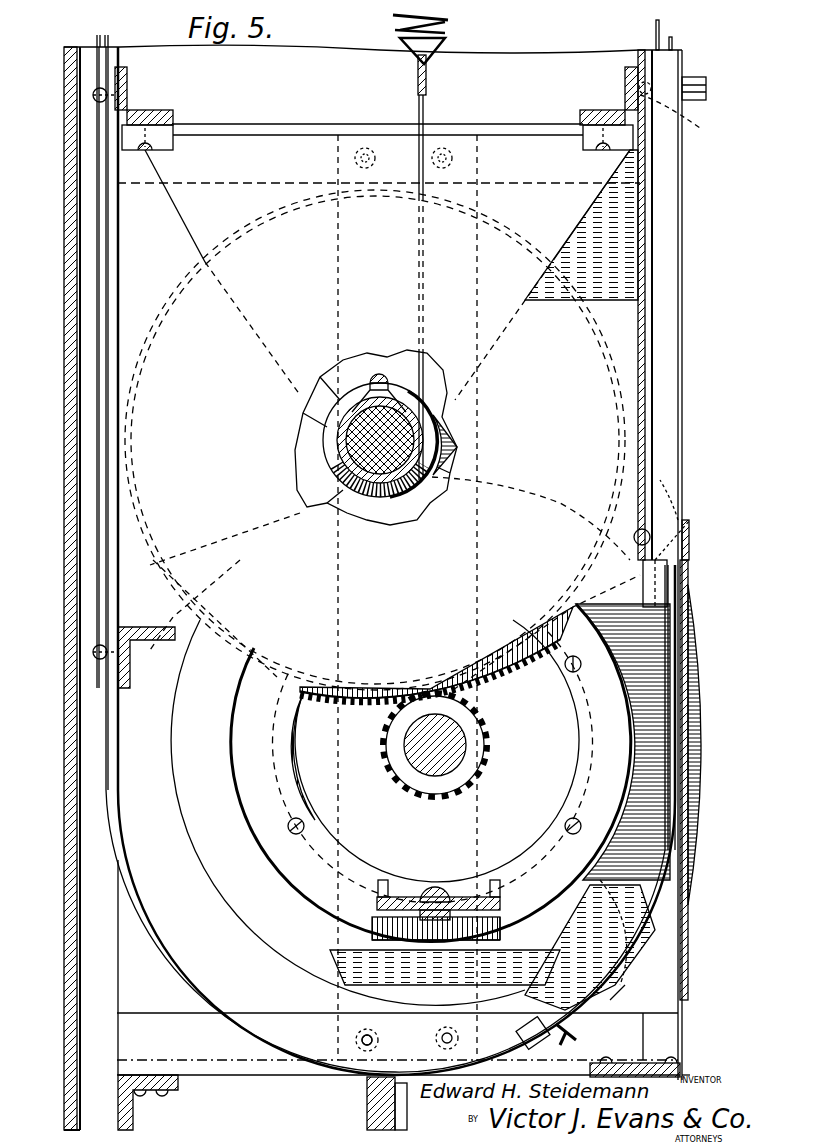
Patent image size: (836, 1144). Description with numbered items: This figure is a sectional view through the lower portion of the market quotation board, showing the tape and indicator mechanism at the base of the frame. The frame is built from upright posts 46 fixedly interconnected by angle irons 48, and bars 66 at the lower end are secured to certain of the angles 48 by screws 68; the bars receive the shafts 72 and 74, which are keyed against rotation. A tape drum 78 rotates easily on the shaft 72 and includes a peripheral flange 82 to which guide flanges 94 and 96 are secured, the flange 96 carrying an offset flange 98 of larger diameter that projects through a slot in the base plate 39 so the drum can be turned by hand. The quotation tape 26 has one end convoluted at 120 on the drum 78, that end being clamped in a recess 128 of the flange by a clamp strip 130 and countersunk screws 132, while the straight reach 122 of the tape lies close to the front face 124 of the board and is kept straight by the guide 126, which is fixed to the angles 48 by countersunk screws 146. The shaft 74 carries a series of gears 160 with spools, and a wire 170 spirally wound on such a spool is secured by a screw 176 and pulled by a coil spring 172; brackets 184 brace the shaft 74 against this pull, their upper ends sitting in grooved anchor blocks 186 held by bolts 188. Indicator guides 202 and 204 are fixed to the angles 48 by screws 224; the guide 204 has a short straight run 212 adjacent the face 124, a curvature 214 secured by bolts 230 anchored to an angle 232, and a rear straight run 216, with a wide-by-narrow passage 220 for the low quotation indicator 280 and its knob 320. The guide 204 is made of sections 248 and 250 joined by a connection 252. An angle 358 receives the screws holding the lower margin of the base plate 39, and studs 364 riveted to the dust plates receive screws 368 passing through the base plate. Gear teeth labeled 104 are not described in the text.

The quotation tape 26 is at (656, 32).
The base plate 39 is at (685, 935).
The upright posts 46 is at (64, 930).
The angle irons 48 is at (150, 110).
The bars 66 is at (480, 195).
The screws 68 is at (420, 130).
The shaft 72 is at (460, 752).
The shaft 74 is at (400, 505).
The tape drum 78 is at (257, 843).
The peripheral flange 82 is at (395, 885).
The flange 94 is at (285, 880).
The flange 96 is at (505, 932).
The offset flange 98 is at (702, 754).
The gear 104 is at (478, 780).
The convoluted end 120 is at (390, 945).
The straight reach 122 is at (660, 25).
The front face 124 is at (685, 211).
The guide 126 is at (672, 271).
The recess 128 is at (446, 887).
The clamp strip 130 is at (430, 890).
The screws 132 is at (445, 948).
The screws 146 is at (691, 110).
The gears 160 is at (505, 672).
The wire 170 is at (428, 397).
The coil spring 172 is at (448, 22).
The screw 176 is at (375, 378).
The brackets 184 is at (560, 250).
The grooved anchor blocks 186 is at (175, 147).
The bolts 188 is at (148, 160).
The guide 202 is at (97, 387).
The guide 204 is at (118, 493).
The short straight run 212 is at (675, 700).
The curvature 214 is at (610, 958).
The straight run 216 is at (140, 558).
The passage 220 is at (100, 491).
The screws 224 is at (93, 95).
The bolts 230 is at (403, 1058).
The angle 232 is at (367, 1105).
The section 248 is at (606, 1012).
The section 250 is at (505, 1040).
The connection 252 is at (575, 1032).
The low quotation indicator 280 is at (672, 44).
The knob 320 is at (706, 90).
The angle 358 is at (685, 1060).
The studs 364 is at (680, 498).
The screws 368 is at (692, 537).